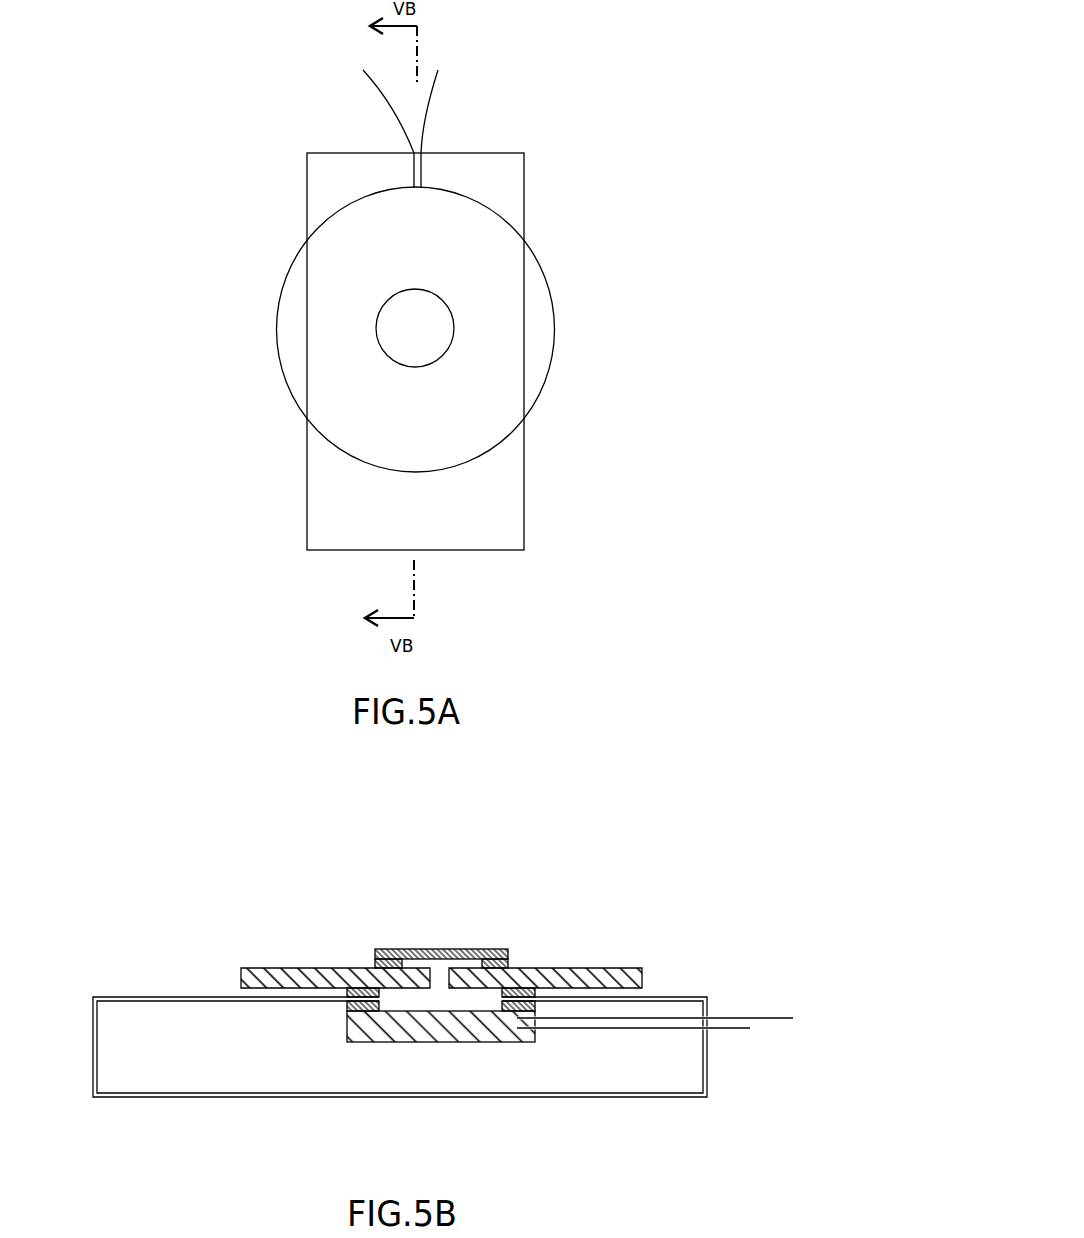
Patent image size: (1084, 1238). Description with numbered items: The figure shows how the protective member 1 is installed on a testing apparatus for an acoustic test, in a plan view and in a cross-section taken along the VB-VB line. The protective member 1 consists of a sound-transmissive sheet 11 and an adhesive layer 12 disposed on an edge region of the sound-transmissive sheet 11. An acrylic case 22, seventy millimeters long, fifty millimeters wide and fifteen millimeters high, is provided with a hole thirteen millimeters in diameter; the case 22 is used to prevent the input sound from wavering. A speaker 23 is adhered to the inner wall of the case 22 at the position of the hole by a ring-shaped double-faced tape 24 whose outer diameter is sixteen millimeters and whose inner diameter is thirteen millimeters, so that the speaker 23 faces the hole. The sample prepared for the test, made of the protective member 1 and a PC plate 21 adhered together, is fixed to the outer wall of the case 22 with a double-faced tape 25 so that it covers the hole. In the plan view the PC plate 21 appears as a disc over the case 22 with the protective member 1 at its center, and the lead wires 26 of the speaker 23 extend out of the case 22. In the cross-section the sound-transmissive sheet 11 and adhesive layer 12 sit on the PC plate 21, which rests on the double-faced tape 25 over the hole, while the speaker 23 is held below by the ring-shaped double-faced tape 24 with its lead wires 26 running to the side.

In FIG. 5A, the protective member 1 is at (432, 326).
In FIG. 5B, the protective member 1 is at (424, 898).
In FIG. 5B, the sound-transmissive sheet 11 is at (408, 948).
In FIG. 5B, the adhesive layer 12 is at (418, 872).
In FIG. 5A, the PC plate 21 is at (508, 377).
In FIG. 5B, the PC plate 21 is at (268, 977).
In FIG. 5A, the case 22 is at (497, 494).
In FIG. 5B, the case 22 is at (247, 1097).
In FIG. 5B, the speaker 23 is at (437, 1030).
In FIG. 5B, the ring-shaped double-faced tape 24 is at (532, 1007).
In FIG. 5B, the double-faced tape 25 is at (540, 992).
In FIG. 5A, the lead wires 26 is at (393, 100).
In FIG. 5B, the lead wires 26 is at (762, 1020).